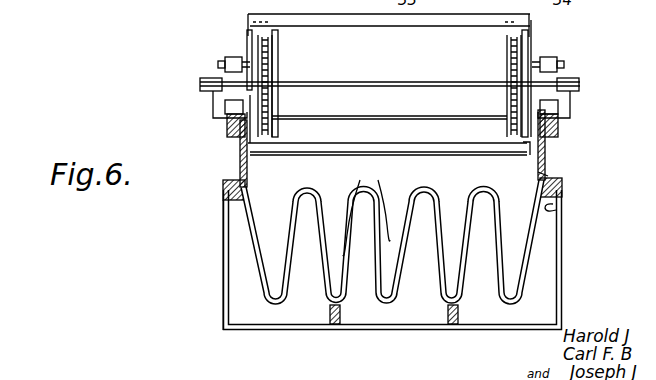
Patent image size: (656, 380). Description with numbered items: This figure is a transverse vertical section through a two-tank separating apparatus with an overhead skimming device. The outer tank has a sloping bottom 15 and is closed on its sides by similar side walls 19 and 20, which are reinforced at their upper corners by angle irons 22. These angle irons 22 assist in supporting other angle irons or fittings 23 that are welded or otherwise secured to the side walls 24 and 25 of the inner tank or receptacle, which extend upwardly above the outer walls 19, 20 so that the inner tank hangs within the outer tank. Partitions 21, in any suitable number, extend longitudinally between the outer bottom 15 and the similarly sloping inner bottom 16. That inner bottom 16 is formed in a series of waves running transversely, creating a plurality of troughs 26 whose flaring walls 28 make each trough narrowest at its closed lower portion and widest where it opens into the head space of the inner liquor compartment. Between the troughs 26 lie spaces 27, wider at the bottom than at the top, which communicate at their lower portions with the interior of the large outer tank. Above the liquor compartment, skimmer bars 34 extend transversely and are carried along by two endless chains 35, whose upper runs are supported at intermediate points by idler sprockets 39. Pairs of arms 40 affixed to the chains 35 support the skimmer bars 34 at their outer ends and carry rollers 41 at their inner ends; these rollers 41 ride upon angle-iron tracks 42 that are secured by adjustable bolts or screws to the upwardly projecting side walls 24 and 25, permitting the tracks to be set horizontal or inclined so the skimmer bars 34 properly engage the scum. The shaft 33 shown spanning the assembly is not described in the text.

The sloping bottom of outer tank 15 is at (383, 330).
The sloping bottom of inner tank 16 is at (395, 303).
The side wall of outer tank 19 is at (222, 275).
The side wall of outer tank 20 is at (562, 244).
The partition 21 is at (327, 313).
The angle iron 22 is at (560, 210).
The angle iron 23 is at (548, 172).
The side wall of inner tank 24 is at (240, 157).
The side wall of inner tank 25 is at (543, 147).
The trough 26 is at (366, 209).
The space 27 is at (307, 255).
The flaring wall 28 is at (292, 212).
The shaft 33 is at (390, 84).
The skimmer bar 34 is at (387, 143).
The endless chain 35 is at (278, 41).
The idler sprocket 39 is at (272, 67).
The arm 40 is at (248, 38).
The roller 41 is at (232, 98).
The track 42 is at (226, 110).